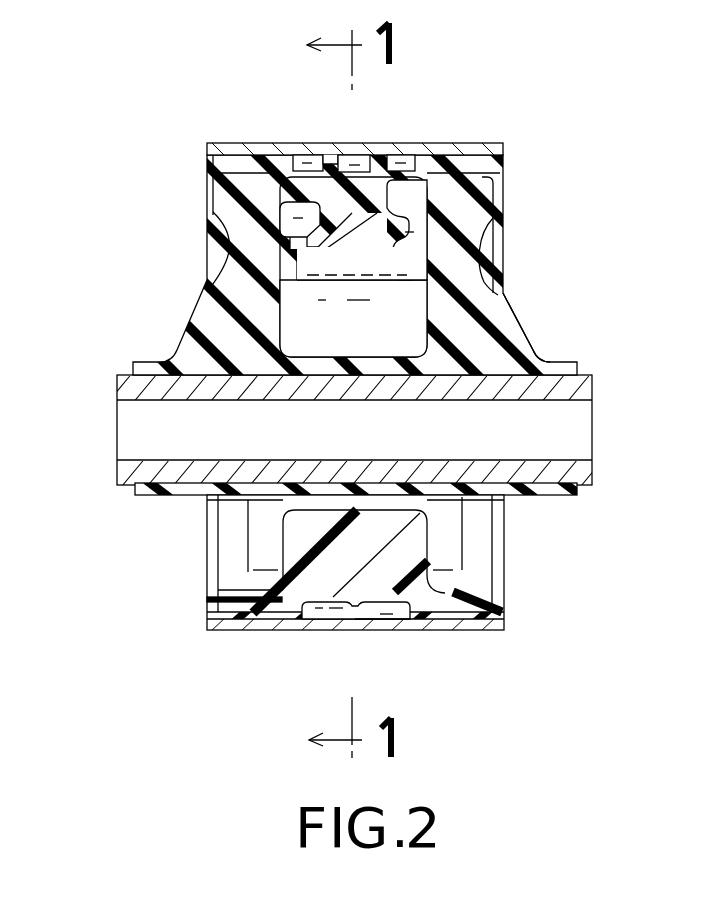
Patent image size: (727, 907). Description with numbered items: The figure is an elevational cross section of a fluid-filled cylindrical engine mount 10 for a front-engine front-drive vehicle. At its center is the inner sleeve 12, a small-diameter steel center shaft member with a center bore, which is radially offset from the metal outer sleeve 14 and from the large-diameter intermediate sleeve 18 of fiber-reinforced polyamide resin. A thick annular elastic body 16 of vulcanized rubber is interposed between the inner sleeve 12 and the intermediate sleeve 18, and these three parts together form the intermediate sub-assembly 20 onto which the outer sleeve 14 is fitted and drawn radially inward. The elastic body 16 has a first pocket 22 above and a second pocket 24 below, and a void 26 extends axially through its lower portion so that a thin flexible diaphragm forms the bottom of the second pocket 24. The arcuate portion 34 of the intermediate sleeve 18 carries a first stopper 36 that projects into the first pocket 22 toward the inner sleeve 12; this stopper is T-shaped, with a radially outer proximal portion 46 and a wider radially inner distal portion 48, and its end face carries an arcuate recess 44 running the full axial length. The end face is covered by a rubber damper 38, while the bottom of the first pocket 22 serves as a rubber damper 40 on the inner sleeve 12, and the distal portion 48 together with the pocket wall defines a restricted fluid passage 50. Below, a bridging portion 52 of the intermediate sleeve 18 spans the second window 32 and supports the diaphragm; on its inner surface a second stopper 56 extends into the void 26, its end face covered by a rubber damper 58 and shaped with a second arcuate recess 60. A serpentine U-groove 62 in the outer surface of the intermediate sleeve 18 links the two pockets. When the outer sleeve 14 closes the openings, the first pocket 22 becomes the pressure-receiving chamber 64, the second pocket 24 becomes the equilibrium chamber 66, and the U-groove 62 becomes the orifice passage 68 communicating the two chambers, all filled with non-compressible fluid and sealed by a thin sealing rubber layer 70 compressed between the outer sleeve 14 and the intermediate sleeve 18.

The fluid-filled cylindrical engine mount 10 is at (236, 92).
The inner sleeve 12 is at (135, 388).
The outer sleeve 14 is at (222, 630).
The elastic body 16 is at (488, 314).
The intermediate sleeve 18 is at (467, 612).
The intermediate sub-assembly 20 is at (208, 194).
The first pocket 22 is at (283, 318).
The second pocket 24 is at (365, 621).
The void 26 is at (390, 500).
The second window 32 is at (312, 622).
The arcuate portion 34 is at (332, 160).
The first stopper 36 is at (283, 240).
The rubber damper 38 is at (341, 280).
The rubber damper 40 is at (352, 355).
The arcuate recess 44 is at (405, 287).
The proximal portion 46 is at (375, 213).
The distal portion 48 is at (400, 258).
The restricted fluid passage 50 is at (297, 262).
The bridging portion 52 is at (347, 622).
The second stopper 56 is at (293, 543).
The rubber damper 58 is at (213, 497).
The second arcuate recess 60 is at (312, 495).
The U-groove 62 is at (407, 155).
The pressure-receiving chamber 64 is at (410, 328).
The equilibrium chamber 66 is at (402, 620).
The orifice passage 68 is at (358, 155).
The sealing rubber layer 70 is at (278, 155).